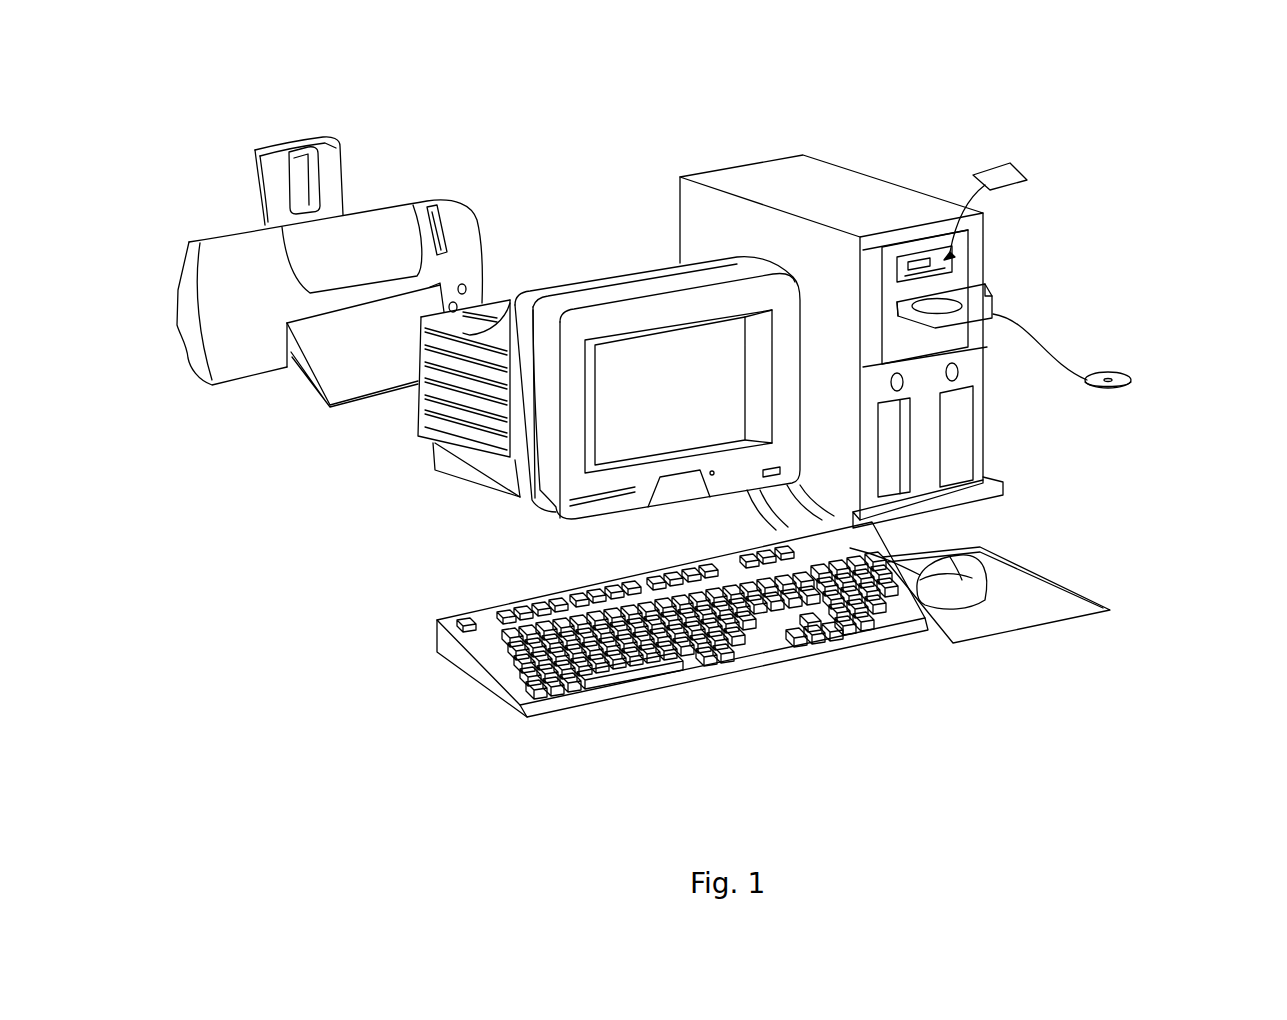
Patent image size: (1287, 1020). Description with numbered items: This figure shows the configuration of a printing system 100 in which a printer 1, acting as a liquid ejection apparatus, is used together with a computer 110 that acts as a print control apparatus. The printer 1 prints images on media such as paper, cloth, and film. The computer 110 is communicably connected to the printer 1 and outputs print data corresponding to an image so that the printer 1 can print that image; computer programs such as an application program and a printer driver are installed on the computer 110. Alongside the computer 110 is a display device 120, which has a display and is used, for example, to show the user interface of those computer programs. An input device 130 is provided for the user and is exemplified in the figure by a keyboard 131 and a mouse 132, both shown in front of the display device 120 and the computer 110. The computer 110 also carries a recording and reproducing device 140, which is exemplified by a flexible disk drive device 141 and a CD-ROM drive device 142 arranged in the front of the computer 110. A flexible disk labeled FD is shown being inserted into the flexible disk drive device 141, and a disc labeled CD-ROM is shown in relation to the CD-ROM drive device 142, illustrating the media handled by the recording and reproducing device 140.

The printing system 100 is at (722, 118).
The printer 1 is at (448, 215).
The computer 110 is at (857, 195).
The display device 120 is at (634, 295).
The input device 130 is at (985, 748).
The keyboard 131 is at (840, 630).
The mouse 132 is at (967, 593).
The recording and reproducing device 140 is at (1150, 240).
The flexible disk drive device 141 is at (955, 266).
The CD-ROM drive device 142 is at (955, 292).
The floppy disk FD is at (1000, 167).
The CD-ROM disc CD-ROM is at (1122, 390).